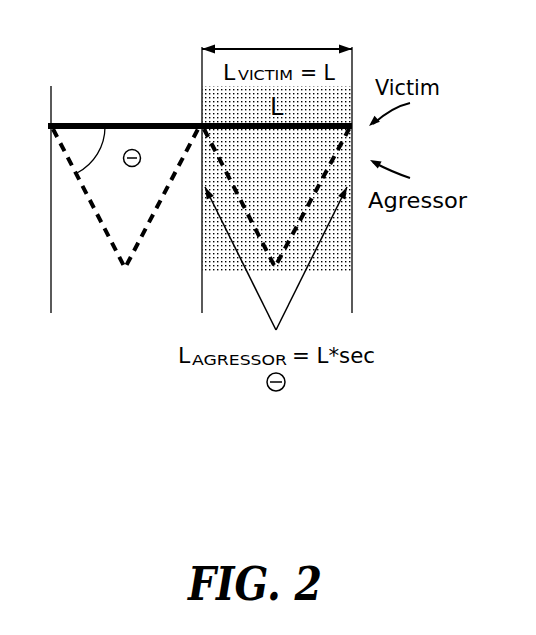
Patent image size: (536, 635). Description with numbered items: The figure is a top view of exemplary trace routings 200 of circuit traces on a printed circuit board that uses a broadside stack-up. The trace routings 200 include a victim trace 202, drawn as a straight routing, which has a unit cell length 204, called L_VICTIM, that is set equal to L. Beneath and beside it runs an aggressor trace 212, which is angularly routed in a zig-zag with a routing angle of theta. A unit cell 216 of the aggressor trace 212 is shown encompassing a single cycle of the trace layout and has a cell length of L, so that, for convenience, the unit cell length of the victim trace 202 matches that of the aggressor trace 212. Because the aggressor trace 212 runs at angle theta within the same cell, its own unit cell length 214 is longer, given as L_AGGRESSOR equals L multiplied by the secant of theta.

The trace routings 200 is at (218, 443).
The victim trace 202 is at (76, 123).
The unit cell length 204 is at (258, 48).
The aggressor trace 212 is at (107, 236).
The unit cell length of aggressor trace 214 is at (257, 293).
The unit cell 216 is at (312, 273).